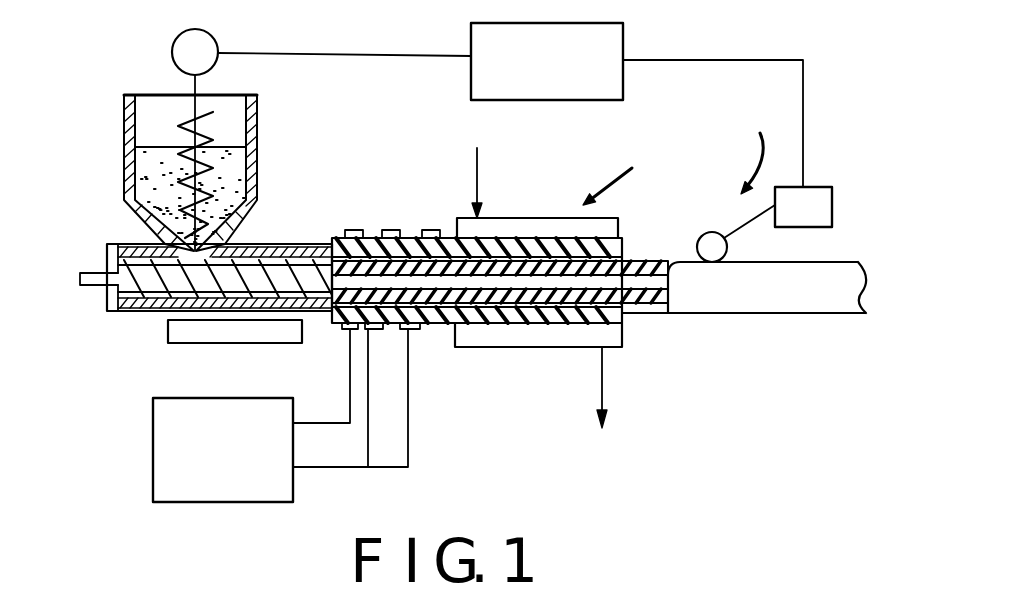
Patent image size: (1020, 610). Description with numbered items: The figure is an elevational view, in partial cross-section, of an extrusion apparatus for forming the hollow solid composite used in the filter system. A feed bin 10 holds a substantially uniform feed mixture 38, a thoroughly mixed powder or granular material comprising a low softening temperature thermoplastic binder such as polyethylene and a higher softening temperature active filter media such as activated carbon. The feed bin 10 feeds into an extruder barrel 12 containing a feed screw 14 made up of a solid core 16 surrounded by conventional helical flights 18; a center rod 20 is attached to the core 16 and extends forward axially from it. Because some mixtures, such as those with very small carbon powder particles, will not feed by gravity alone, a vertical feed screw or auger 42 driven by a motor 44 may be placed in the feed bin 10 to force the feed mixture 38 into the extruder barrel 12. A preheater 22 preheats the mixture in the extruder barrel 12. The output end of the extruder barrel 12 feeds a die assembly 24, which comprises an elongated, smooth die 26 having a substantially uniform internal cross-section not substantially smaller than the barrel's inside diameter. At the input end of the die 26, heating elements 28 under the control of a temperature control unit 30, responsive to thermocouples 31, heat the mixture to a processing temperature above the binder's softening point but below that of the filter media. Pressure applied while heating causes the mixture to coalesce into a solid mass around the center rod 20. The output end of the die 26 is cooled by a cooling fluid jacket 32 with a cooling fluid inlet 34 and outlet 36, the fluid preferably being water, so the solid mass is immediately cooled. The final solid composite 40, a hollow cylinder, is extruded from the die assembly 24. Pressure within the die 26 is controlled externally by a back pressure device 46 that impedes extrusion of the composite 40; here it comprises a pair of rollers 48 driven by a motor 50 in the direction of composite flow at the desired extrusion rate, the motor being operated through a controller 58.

The feed bin 10 is at (258, 110).
The extruder barrel 12 is at (233, 245).
The feed screw 14 is at (130, 318).
The solid core 16 is at (148, 272).
The helical flights 18 is at (273, 270).
The center rod 20 is at (470, 283).
The preheater 22 is at (207, 333).
The die assembly 24 is at (612, 172).
The elongated die 26 is at (457, 330).
The heating elements 28 is at (430, 228).
The temperature control unit 30 is at (153, 455).
The thermocouples 31 is at (407, 329).
The cooling fluid jacket 32 is at (547, 335).
The cooling fluid inlet 34 is at (480, 170).
The cooling fluid outlet 36 is at (602, 378).
The feed mixture 38 is at (227, 195).
The solid composite 40 is at (735, 290).
The auger 42 is at (213, 115).
The motor 44 is at (213, 43).
The back pressure device 46 is at (742, 152).
The rollers 48 is at (706, 240).
The motor 50 is at (817, 187).
The controller 58 is at (622, 38).